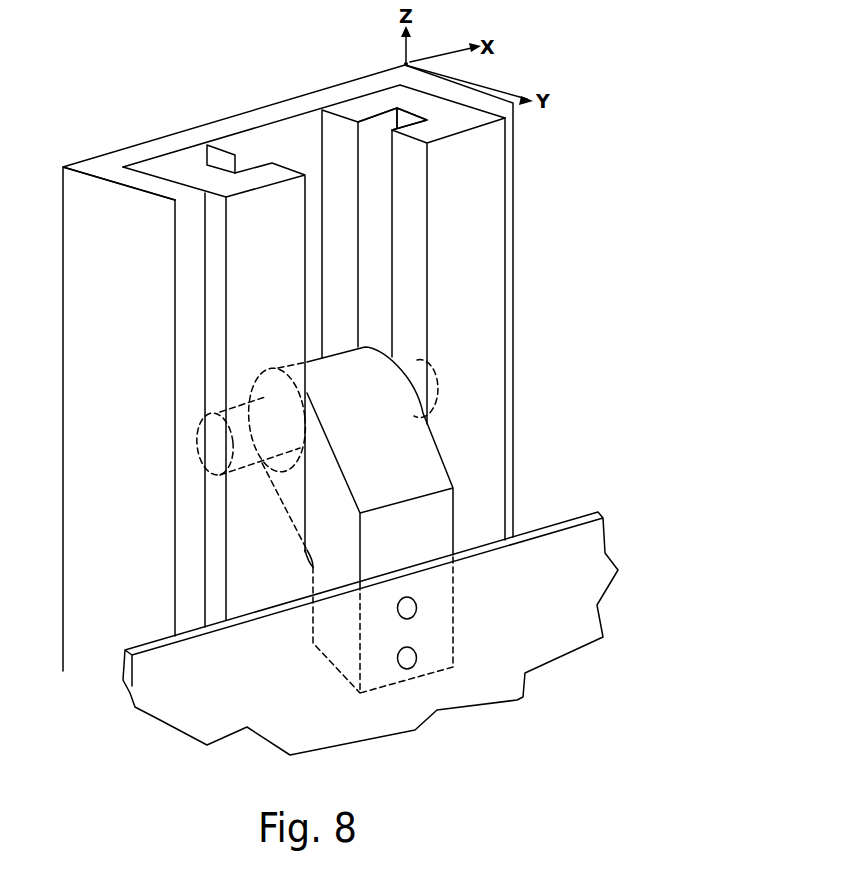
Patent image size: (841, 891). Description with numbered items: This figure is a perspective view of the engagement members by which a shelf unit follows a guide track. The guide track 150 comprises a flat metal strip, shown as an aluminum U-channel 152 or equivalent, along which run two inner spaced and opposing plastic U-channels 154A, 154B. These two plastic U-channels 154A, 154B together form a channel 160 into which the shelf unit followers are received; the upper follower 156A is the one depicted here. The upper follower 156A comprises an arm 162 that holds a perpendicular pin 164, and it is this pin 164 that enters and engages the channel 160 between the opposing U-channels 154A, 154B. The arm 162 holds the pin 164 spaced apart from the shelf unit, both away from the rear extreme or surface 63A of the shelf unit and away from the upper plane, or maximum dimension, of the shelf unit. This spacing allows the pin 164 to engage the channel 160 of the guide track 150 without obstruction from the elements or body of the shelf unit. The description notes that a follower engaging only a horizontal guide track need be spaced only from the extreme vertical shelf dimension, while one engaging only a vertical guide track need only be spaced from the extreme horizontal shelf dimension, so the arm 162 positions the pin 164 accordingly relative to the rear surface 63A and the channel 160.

The guide track 150 is at (163, 136).
The aluminum U-channel 152 is at (314, 98).
The channel 160 is at (280, 150).
The plastic U-channel 154A is at (223, 188).
The plastic U-channel 154B is at (447, 128).
The upper follower 156A is at (433, 518).
The pin 164 is at (423, 393).
The arm 162 is at (340, 568).
The rear surface 63A is at (562, 613).